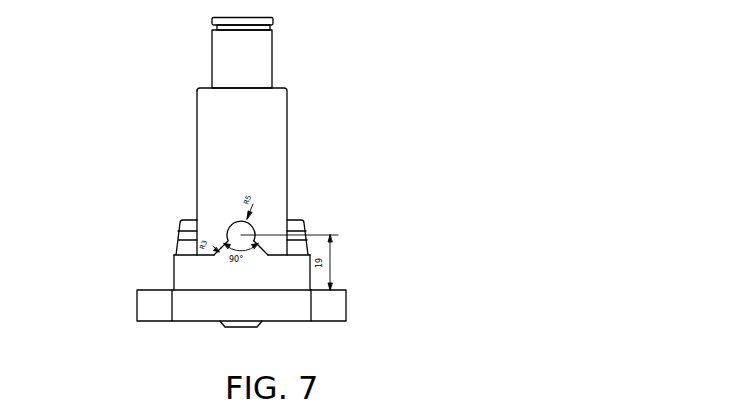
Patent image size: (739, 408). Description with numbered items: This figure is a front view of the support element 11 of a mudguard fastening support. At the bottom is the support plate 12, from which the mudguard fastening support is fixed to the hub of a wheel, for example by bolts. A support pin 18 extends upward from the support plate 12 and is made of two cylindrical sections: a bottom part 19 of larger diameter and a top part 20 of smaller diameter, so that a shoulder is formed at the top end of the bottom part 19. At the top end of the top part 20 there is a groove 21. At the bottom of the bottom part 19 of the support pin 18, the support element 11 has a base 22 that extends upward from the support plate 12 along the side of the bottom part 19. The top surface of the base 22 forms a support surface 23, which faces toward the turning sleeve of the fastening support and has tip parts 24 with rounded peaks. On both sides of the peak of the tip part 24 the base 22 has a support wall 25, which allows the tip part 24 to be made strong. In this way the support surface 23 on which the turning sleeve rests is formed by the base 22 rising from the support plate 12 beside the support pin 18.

The support element 11 is at (345, 177).
The support plate 12 is at (182, 303).
The support pin 18 is at (267, 144).
The bottom part 19 is at (230, 172).
The top part 20 is at (230, 60).
The groove 21 is at (218, 29).
The base 22 is at (197, 263).
The support surface 23 is at (235, 220).
The tip part 24 is at (250, 222).
The support wall 25 is at (260, 248).